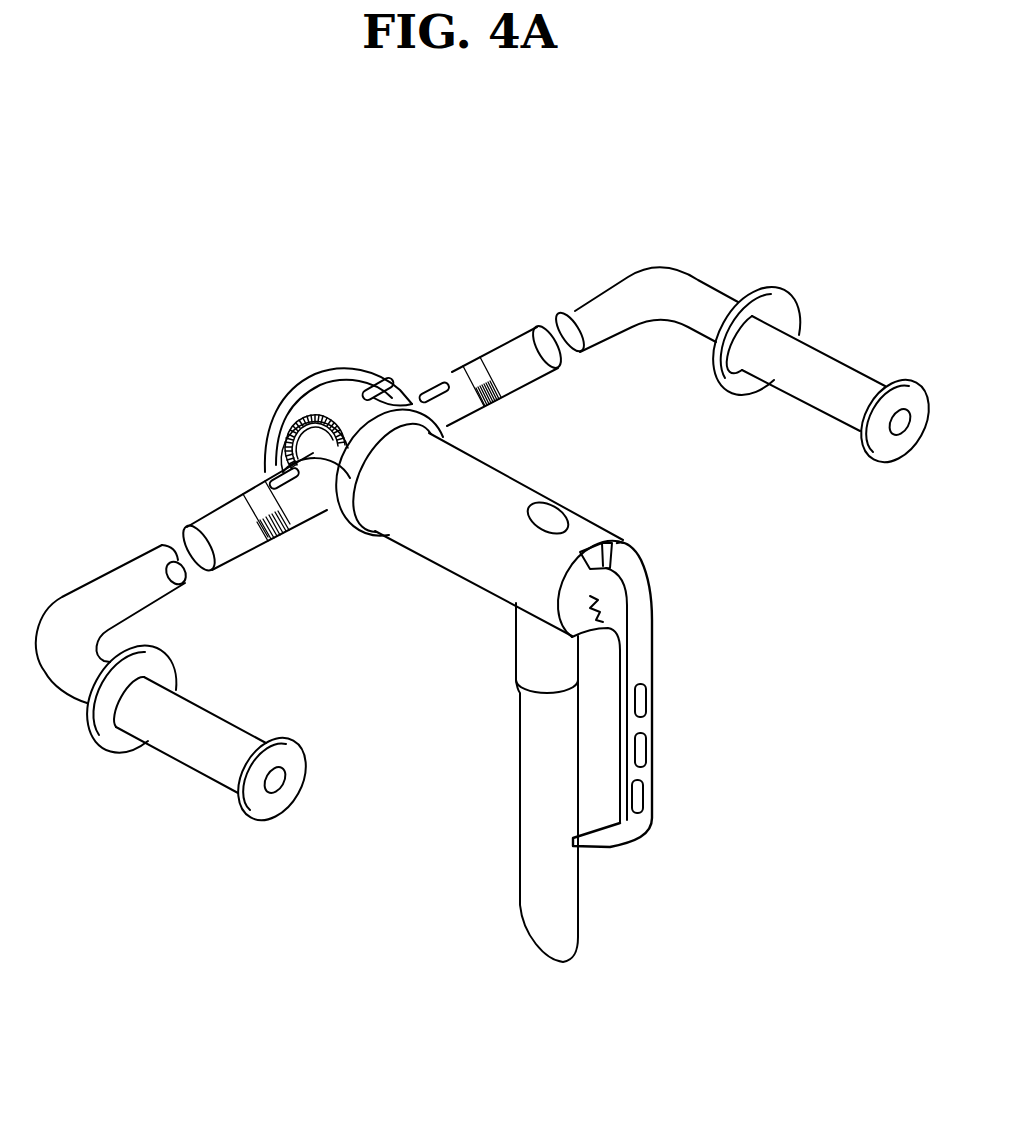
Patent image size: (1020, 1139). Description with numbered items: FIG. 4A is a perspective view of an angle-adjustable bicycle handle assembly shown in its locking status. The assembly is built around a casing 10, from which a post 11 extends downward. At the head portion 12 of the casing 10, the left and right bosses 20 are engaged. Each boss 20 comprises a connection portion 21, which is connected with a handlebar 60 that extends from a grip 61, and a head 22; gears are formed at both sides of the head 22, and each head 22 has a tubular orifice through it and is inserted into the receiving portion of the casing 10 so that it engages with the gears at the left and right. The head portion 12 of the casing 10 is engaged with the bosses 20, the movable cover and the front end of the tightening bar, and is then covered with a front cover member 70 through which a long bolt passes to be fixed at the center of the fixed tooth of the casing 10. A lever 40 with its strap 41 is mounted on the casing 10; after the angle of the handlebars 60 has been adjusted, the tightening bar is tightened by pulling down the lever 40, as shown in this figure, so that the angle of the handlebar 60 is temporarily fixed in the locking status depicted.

The casing 10 is at (580, 477).
The post 11 is at (535, 752).
The head portion 12 is at (342, 392).
The boss 20 is at (438, 373).
The connection portion 21 is at (242, 494).
The head 22 is at (330, 427).
The lever 40 is at (680, 694).
The bracket strap 41 is at (644, 657).
The handlebar 60 is at (643, 280).
The grip 61 is at (855, 367).
The front cover member 70 is at (295, 391).